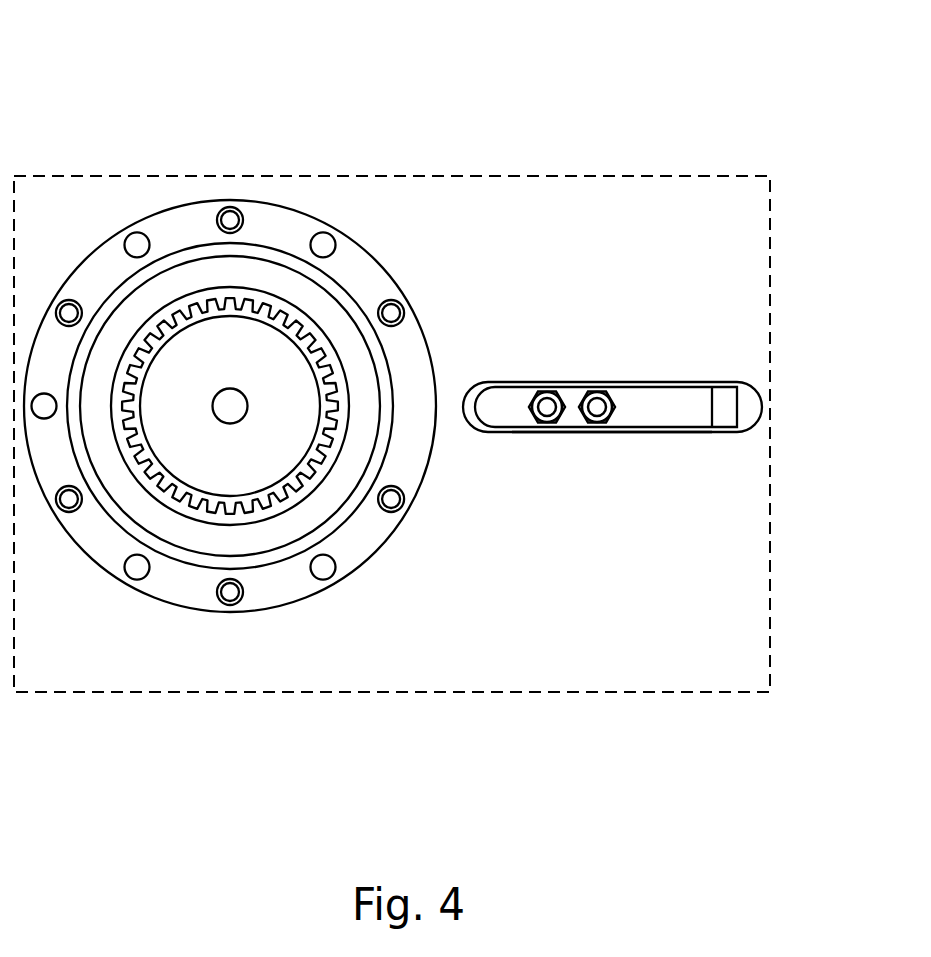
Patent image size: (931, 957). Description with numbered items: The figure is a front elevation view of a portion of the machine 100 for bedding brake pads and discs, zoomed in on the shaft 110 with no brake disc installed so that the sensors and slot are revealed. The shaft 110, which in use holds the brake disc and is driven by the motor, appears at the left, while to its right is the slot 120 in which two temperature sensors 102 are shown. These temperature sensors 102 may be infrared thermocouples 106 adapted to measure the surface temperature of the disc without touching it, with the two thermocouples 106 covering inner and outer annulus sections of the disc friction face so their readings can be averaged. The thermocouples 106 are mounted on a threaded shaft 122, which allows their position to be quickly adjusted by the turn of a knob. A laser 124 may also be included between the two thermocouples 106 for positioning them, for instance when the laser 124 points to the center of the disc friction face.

The machine 100 is at (172, 108).
The temperature sensor 102 is at (535, 387).
The infrared thermocouple 106 is at (598, 387).
The shaft 110 is at (198, 457).
The slot 120 is at (675, 383).
The threaded shaft 122 is at (660, 458).
The laser 124 is at (565, 447).